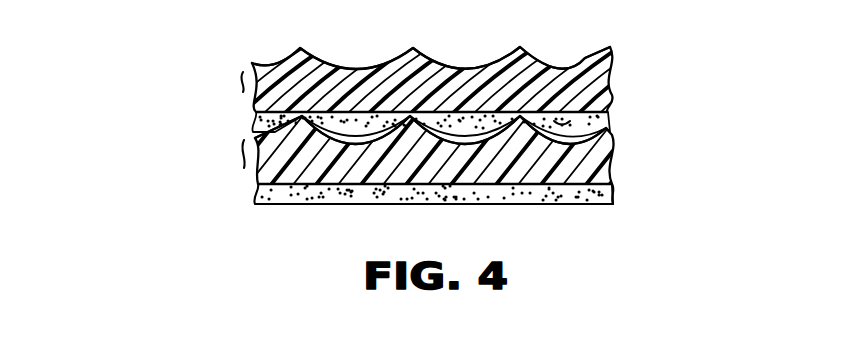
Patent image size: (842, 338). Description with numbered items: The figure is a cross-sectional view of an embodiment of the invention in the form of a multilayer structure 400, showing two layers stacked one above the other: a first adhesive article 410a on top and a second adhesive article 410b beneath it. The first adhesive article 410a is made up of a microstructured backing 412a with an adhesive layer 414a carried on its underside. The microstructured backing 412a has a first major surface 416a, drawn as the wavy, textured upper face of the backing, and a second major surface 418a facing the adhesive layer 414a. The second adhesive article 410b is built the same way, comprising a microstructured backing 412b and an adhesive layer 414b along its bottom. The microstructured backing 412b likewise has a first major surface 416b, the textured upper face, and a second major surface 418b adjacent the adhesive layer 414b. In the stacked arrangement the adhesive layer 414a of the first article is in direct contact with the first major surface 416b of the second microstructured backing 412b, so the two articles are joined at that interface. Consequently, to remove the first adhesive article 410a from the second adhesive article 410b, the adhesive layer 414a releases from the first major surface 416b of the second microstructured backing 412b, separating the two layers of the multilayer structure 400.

The multilayer structure 400 is at (123, 118).
The first adhesive article 410a is at (638, 95).
The second adhesive article 410b is at (638, 163).
The microstructured backing 412a is at (258, 92).
The microstructured backing 412b is at (260, 165).
The adhesive layer 414a is at (260, 128).
The adhesive layer 414b is at (260, 197).
The first major surface 416a is at (591, 56).
The first major surface 416b is at (608, 117).
The second major surface 418a is at (563, 118).
The second major surface 418b is at (613, 192).